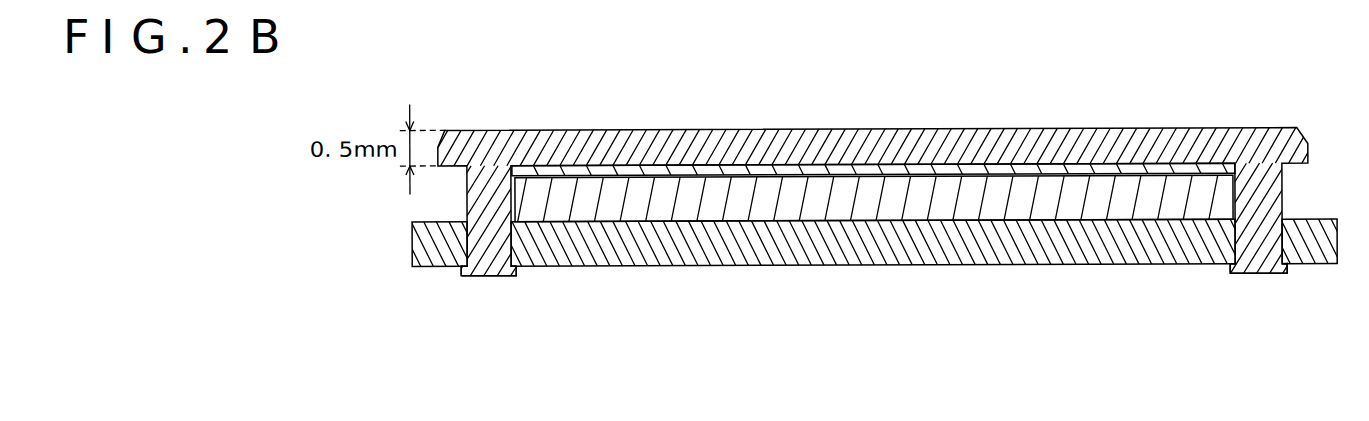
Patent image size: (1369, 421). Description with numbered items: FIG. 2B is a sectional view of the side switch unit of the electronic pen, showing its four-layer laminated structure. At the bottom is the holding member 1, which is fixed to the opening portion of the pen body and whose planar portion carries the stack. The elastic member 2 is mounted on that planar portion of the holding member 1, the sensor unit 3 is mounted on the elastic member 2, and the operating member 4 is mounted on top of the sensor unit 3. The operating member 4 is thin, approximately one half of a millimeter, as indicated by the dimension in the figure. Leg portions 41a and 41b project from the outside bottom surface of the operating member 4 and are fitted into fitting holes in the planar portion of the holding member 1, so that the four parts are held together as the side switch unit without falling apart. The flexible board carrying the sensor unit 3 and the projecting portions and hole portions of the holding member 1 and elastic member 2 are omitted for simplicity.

The holding member 1 is at (792, 257).
The elastic member 2 is at (977, 212).
The sensor unit 3 is at (1043, 170).
The operating member 4 is at (902, 128).
The leg portion 41a is at (485, 276).
The leg portion 41b is at (1250, 273).